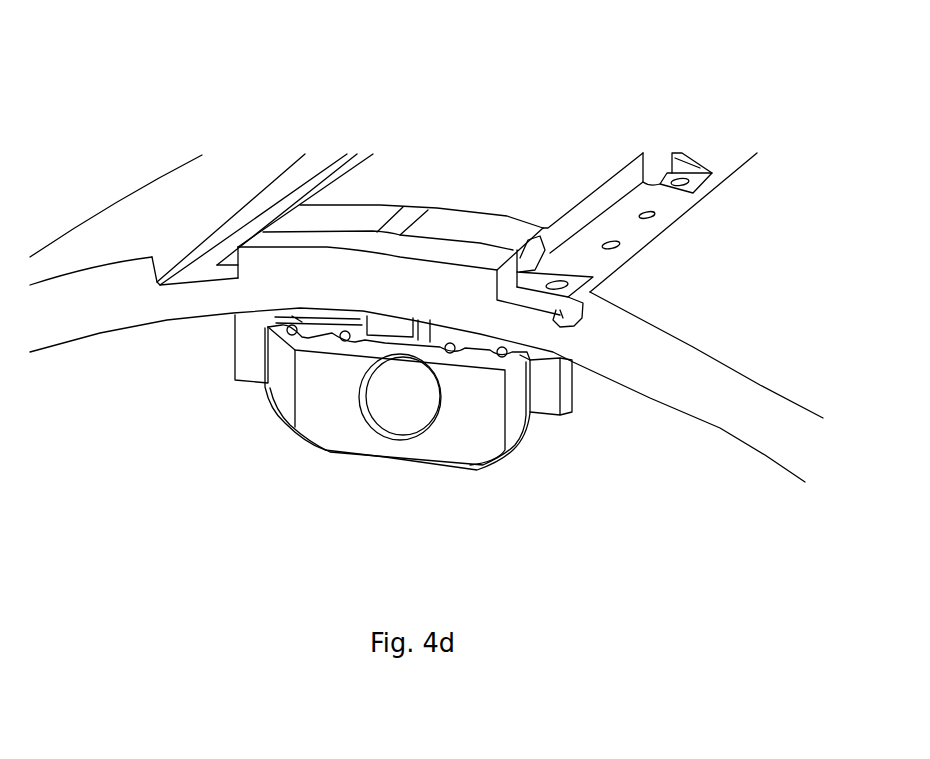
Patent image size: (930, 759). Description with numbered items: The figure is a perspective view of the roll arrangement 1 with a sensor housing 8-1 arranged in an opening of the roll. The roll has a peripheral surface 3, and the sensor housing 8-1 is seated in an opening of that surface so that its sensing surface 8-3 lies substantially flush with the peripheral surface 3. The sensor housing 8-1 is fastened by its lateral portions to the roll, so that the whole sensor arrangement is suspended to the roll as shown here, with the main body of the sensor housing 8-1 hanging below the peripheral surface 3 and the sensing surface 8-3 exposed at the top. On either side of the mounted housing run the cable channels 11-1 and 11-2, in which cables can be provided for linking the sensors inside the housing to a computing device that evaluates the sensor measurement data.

The roll arrangement 1 is at (147, 80).
The peripheral surface 3 is at (446, 177).
The sensor housing 8-1 is at (325, 403).
The sensing surface 8-3 is at (343, 215).
The cable channel 11-1 is at (200, 273).
The cable channel 11-2 is at (565, 322).